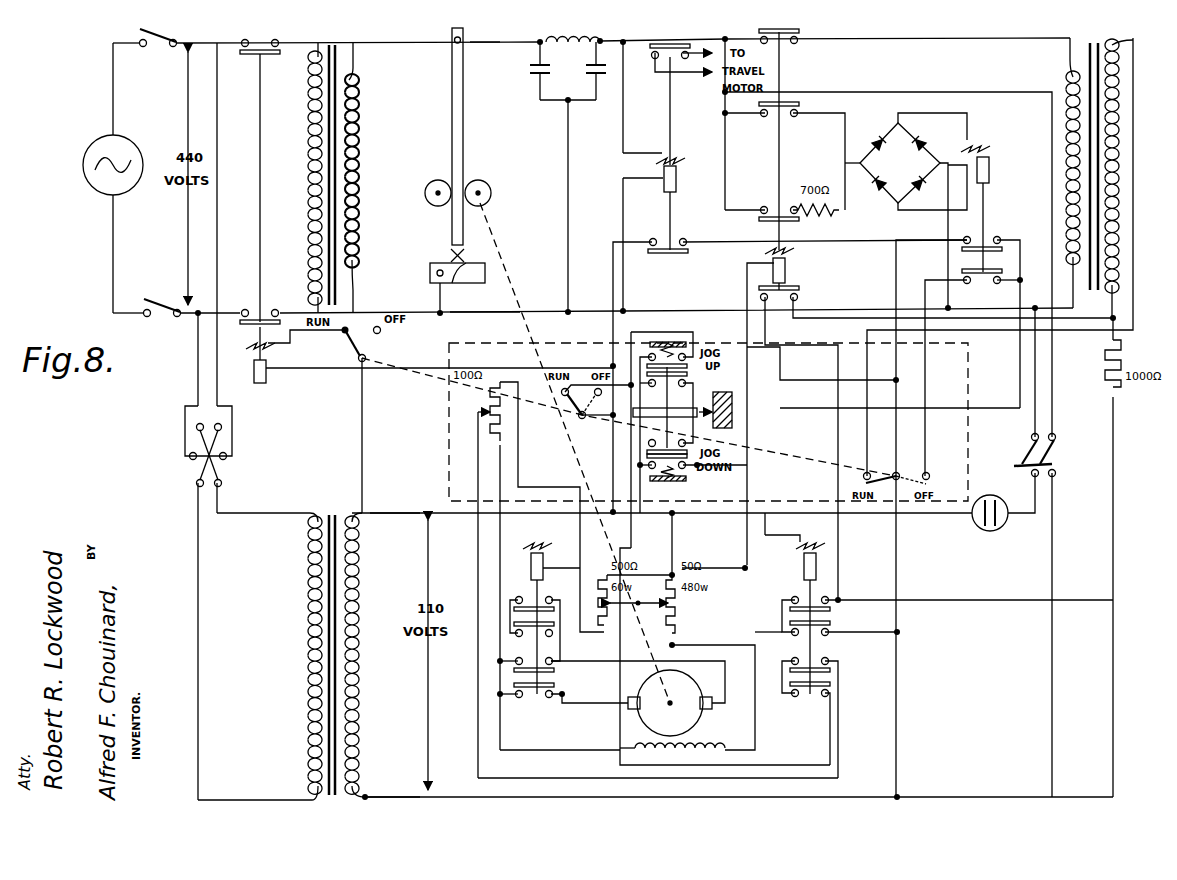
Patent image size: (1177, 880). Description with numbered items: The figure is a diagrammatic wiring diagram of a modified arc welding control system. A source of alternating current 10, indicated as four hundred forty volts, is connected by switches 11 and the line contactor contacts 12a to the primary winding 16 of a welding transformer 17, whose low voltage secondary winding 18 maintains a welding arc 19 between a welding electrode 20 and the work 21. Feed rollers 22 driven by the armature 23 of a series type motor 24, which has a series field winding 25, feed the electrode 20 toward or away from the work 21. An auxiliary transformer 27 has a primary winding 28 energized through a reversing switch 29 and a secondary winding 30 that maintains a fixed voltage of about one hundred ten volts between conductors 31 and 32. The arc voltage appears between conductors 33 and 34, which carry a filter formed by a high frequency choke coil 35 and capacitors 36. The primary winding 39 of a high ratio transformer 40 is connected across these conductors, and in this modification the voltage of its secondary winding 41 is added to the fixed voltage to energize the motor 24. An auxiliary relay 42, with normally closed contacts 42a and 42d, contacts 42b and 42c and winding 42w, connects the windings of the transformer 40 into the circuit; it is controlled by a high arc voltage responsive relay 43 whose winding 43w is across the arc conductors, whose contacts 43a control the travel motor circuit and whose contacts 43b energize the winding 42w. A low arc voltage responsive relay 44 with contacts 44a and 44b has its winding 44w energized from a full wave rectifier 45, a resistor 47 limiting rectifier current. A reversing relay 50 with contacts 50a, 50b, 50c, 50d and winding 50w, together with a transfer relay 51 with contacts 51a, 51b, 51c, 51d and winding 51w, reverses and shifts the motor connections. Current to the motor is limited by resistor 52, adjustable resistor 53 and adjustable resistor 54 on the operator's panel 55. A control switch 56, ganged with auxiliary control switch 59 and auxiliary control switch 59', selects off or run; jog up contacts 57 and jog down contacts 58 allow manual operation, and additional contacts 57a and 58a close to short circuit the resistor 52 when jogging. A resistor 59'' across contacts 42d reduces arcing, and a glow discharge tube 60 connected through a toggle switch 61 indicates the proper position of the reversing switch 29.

The source of alternating current 10 is at (83, 152).
The switches 11 is at (152, 50).
The line contactor contacts 12a is at (262, 46).
The primary winding 16 is at (310, 157).
The welding transformer 17 is at (336, 40).
The secondary winding 18 is at (362, 138).
The welding arc 19 is at (452, 252).
The welding electrode 20 is at (468, 112).
The work 21 is at (430, 270).
The feed rollers 22 is at (431, 182).
The armature 23 is at (712, 712).
The series type motor 24 is at (622, 722).
The series field winding 25 is at (740, 748).
The auxiliary transformer 27 is at (330, 512).
The primary winding 28 is at (308, 631).
The reversing switch 29 is at (234, 434).
The secondary winding 30 is at (360, 603).
The conductor 31 is at (391, 512).
The conductor 32 is at (384, 796).
The conductor 33 is at (481, 41).
The conductor 34 is at (468, 312).
The high frequency choke coil 35 is at (576, 40).
The capacitors 36 is at (588, 76).
The primary winding 39 is at (1066, 84).
The transformer 40 is at (1086, 36).
The secondary winding 41 is at (1122, 126).
The auxiliary relay 42 is at (796, 92).
The normally closed contacts 42a is at (798, 43).
The contacts 42b is at (794, 118).
The contacts 42c is at (765, 207).
The normally closed contacts 42d is at (798, 300).
The winding 42w is at (792, 256).
The high arc voltage responsive relay 43 is at (675, 160).
The normally closed contacts 43a is at (655, 64).
The contacts 43b is at (685, 239).
The winding 43w is at (678, 178).
The low arc voltage responsive relay 44 is at (968, 138).
The contacts 44a is at (1000, 236).
The contacts 44b is at (981, 288).
The winding 44w is at (990, 160).
The full wave rectifier 45 is at (870, 136).
The resistor 47 is at (832, 216).
The reversing relay 50 is at (526, 548).
The contacts 50a is at (518, 598).
The contacts 50b is at (528, 632).
The contacts 50c is at (556, 661).
The contacts 50d is at (523, 702).
The winding 50w is at (537, 543).
The transfer relay 51 is at (846, 574).
The contacts 51a is at (794, 597).
The contacts 51b is at (830, 634).
The contacts 51c is at (830, 662).
The contacts 51d is at (808, 700).
The winding 51w is at (801, 548).
The resistor 52 is at (683, 619).
The adjustable resistor 53 is at (613, 619).
The adjustable resistor 54 is at (490, 399).
The operator's panel 55 is at (449, 433).
The control switch 56 is at (906, 462).
The jog up contacts 57 is at (650, 384).
The contacts 57a is at (689, 369).
The jog down contacts 58 is at (650, 446).
The contacts 58a is at (688, 471).
The auxiliary control switch 59 is at (571, 410).
The auxiliary control switch 59' is at (378, 344).
The resistor 59'' is at (1094, 363).
The glow discharge tube 60 is at (1002, 525).
The toggle switch 61 is at (1058, 463).